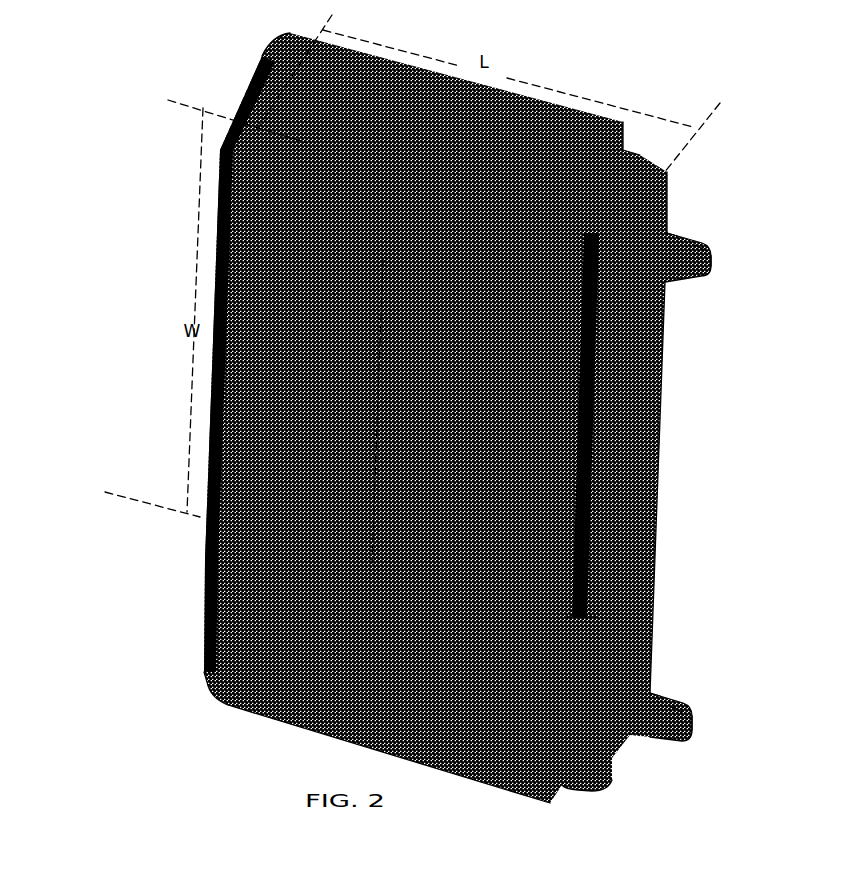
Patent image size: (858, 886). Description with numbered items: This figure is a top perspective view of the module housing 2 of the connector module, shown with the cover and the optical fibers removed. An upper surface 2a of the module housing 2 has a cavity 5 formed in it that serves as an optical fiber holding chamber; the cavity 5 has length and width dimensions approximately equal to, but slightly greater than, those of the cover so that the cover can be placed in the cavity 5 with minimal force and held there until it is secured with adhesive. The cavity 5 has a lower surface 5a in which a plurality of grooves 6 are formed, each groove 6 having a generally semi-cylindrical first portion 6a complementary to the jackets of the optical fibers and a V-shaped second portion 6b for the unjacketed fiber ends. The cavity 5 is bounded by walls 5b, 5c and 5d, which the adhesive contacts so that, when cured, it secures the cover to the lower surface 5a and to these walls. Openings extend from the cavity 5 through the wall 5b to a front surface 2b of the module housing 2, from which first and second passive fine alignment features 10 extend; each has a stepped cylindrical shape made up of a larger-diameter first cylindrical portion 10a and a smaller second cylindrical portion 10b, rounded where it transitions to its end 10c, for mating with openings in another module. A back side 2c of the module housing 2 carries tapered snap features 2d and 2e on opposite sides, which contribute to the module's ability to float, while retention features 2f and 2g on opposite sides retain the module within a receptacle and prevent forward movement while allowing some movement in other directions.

The module housing 2 is at (738, 105).
The upper surface 2a is at (452, 650).
The front surface 2b is at (653, 492).
The back side 2c is at (217, 245).
The tapered snap feature 2d is at (250, 88).
The tapered snap feature 2e is at (203, 633).
The retention feature 2f is at (632, 153).
The retention feature 2g is at (590, 787).
The cavity 5 is at (580, 233).
The lower surface 5a is at (528, 540).
The wall 5b is at (597, 367).
The wall 5c is at (471, 220).
The wall 5d is at (463, 582).
The grooves 6 is at (297, 262).
The first portion 6a is at (293, 423).
The second portion 6b is at (433, 503).
The passive fine alignment feature 10 is at (730, 274).
The first cylindrical portion 10a is at (677, 233).
The second cylindrical portion 10b is at (700, 248).
The end 10c is at (717, 267).